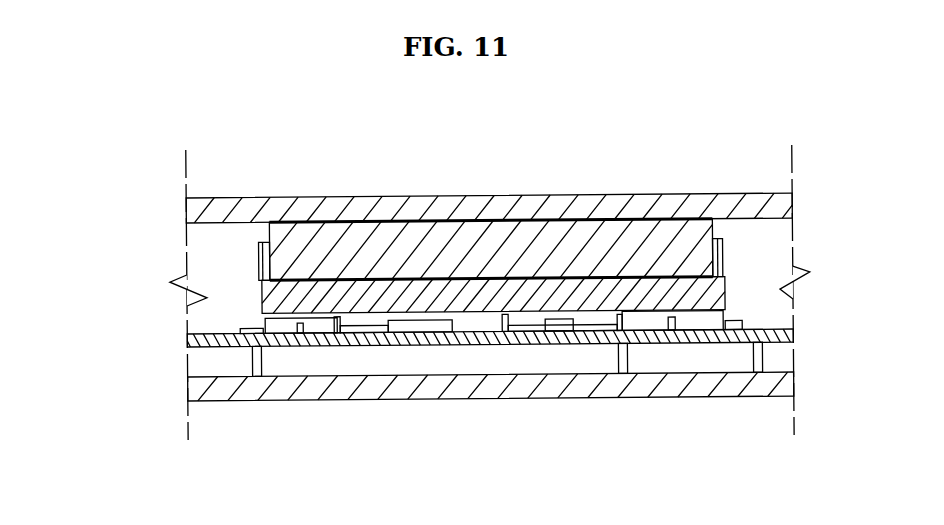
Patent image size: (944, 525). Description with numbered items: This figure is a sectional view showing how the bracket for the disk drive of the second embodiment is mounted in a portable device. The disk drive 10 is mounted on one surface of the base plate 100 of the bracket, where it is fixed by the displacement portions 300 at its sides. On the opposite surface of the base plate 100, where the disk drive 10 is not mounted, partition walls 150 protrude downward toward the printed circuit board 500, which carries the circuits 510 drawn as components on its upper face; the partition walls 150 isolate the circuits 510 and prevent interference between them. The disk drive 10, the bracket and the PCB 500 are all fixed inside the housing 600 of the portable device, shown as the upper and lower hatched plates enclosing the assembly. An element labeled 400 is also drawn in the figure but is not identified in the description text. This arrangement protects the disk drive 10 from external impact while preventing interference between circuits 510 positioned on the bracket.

The disk drive 10 is at (400, 252).
The base plate 100 is at (727, 284).
The partition wall 150 is at (618, 318).
The displacement portion 300 is at (713, 252).
The printed circuit board 400 is at (742, 317).
The printed circuit board 500 is at (753, 333).
The circuits 510 is at (617, 328).
The housing 600 is at (208, 213).